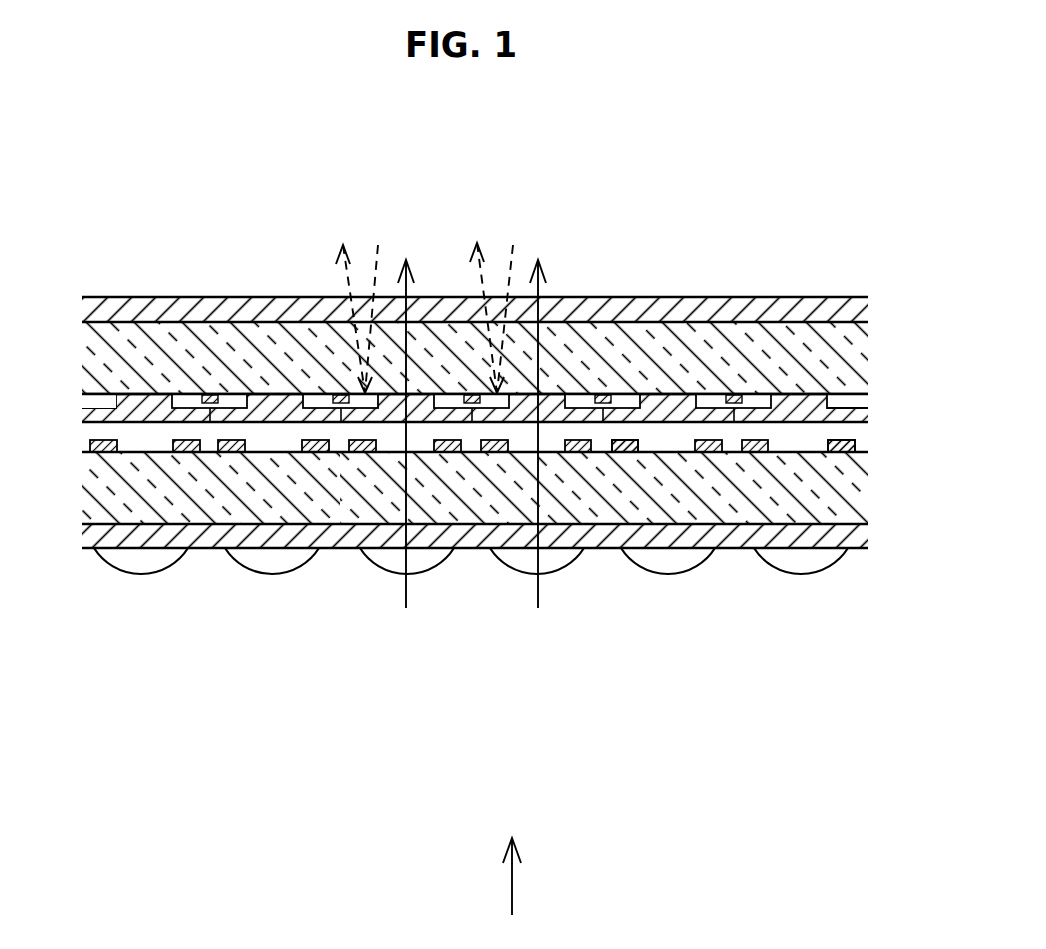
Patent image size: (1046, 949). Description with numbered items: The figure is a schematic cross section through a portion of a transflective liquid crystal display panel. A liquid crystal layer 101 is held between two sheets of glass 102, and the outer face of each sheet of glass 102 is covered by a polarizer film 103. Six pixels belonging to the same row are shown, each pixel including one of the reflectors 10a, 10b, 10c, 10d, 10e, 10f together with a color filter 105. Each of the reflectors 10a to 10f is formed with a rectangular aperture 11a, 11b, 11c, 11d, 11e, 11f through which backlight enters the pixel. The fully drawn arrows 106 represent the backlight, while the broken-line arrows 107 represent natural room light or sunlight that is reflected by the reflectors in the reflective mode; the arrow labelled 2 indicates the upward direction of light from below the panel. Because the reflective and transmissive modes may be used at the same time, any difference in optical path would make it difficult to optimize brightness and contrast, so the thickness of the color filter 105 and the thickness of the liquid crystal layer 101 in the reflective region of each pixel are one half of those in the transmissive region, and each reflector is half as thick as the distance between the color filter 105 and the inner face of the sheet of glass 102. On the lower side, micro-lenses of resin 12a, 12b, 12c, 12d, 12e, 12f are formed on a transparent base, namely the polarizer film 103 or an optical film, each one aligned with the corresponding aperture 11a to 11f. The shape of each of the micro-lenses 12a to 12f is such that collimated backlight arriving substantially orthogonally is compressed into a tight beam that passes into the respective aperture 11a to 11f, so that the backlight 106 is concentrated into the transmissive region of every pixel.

The object / light direction 2 is at (512, 892).
The liquid crystal layer 101 is at (842, 433).
The sheet of glass 102 is at (817, 347).
The polarizer film 103 is at (650, 310).
The color filter 105 is at (692, 394).
The backlight 106 is at (405, 593).
The natural room or sunlight 107 is at (376, 270).
The reflector 10a is at (102, 452).
The reflector 10b is at (218, 452).
The reflector 10c is at (353, 452).
The reflector 10d is at (488, 452).
The reflector 10e is at (625, 452).
The reflector 10f is at (840, 457).
The rectangular aperture 11a is at (172, 442).
The rectangular aperture 11b is at (303, 440).
The rectangular aperture 11c is at (434, 443).
The rectangular aperture 11d is at (565, 443).
The rectangular aperture 11e is at (640, 448).
The rectangular aperture 11f is at (828, 450).
The micro-lens 12a is at (141, 575).
The micro-lens 12b is at (272, 575).
The micro-lens 12c is at (383, 577).
The micro-lens 12d is at (518, 577).
The micro-lens 12e is at (677, 575).
The micro-lens 12f is at (812, 577).